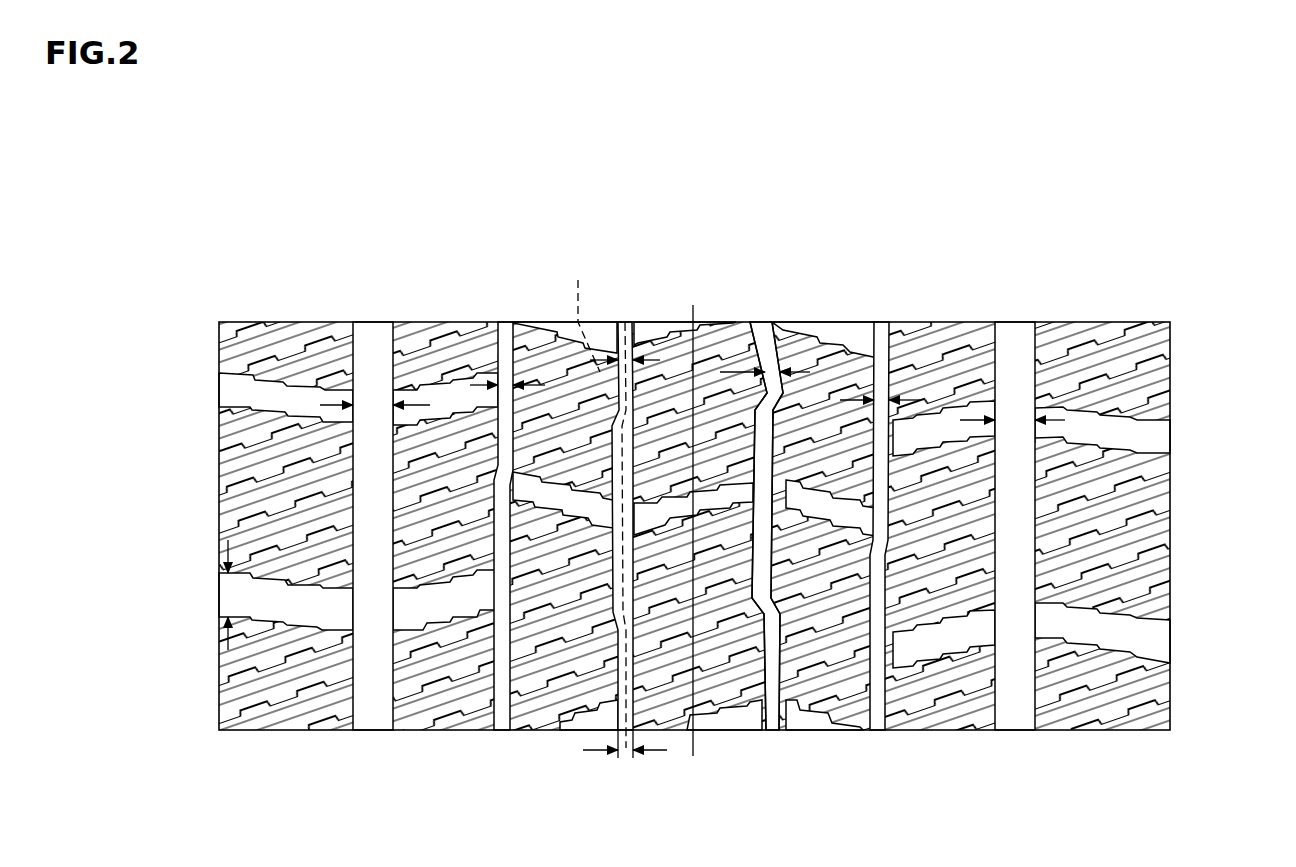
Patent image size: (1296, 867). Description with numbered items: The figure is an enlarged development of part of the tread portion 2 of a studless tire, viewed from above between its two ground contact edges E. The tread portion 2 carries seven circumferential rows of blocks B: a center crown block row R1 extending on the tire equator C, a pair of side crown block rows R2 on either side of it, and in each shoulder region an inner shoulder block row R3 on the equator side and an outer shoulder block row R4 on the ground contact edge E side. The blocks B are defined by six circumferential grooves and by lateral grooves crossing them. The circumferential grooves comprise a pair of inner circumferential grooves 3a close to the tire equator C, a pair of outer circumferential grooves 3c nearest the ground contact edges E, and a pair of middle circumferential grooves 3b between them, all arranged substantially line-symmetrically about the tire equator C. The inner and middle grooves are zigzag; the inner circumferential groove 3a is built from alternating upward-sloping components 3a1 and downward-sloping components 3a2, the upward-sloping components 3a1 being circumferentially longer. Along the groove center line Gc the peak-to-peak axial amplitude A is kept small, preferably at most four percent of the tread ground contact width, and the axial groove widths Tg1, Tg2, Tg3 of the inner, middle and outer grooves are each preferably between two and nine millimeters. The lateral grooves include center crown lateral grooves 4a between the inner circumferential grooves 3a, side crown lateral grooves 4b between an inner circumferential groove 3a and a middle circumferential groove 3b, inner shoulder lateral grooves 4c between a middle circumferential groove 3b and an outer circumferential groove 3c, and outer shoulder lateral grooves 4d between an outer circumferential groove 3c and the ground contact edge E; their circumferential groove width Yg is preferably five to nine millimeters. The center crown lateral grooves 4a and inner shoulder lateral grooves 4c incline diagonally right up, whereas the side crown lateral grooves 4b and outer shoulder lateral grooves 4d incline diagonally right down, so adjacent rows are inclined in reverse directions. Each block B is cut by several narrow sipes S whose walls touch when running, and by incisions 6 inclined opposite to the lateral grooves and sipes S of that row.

The tread portion 2 is at (1186, 306).
The ground contact edge E is at (219, 347).
The incision 6 is at (232, 415).
The block B is at (225, 332).
The sipe S is at (297, 658).
The groove width of lateral grooves Yg is at (228, 597).
The inner circumferential groove 3a is at (626, 330).
The upward-sloping component 3a1 is at (779, 620).
The downward-sloping component 3a2 is at (763, 612).
The middle circumferential groove 3b is at (504, 382).
The outer circumferential groove 3c is at (372, 405).
The center crown lateral groove 4a is at (658, 518).
The side crown lateral groove 4b is at (572, 505).
The inner shoulder lateral groove 4c is at (433, 603).
The outer shoulder lateral groove 4d is at (253, 600).
The amplitude A is at (625, 755).
The groove width of inner circumferential groove Tg1 is at (626, 358).
The groove width of middle circumferential groove Tg2 is at (502, 385).
The groove width of outer circumferential groove Tg3 is at (368, 404).
The groove center line Gc is at (593, 500).
The tire equator C is at (695, 516).
The center crown block row R1 is at (668, 310).
The side crown block row R2 is at (560, 312).
The inner shoulder block row R3 is at (437, 312).
The outer shoulder block row R4 is at (300, 312).